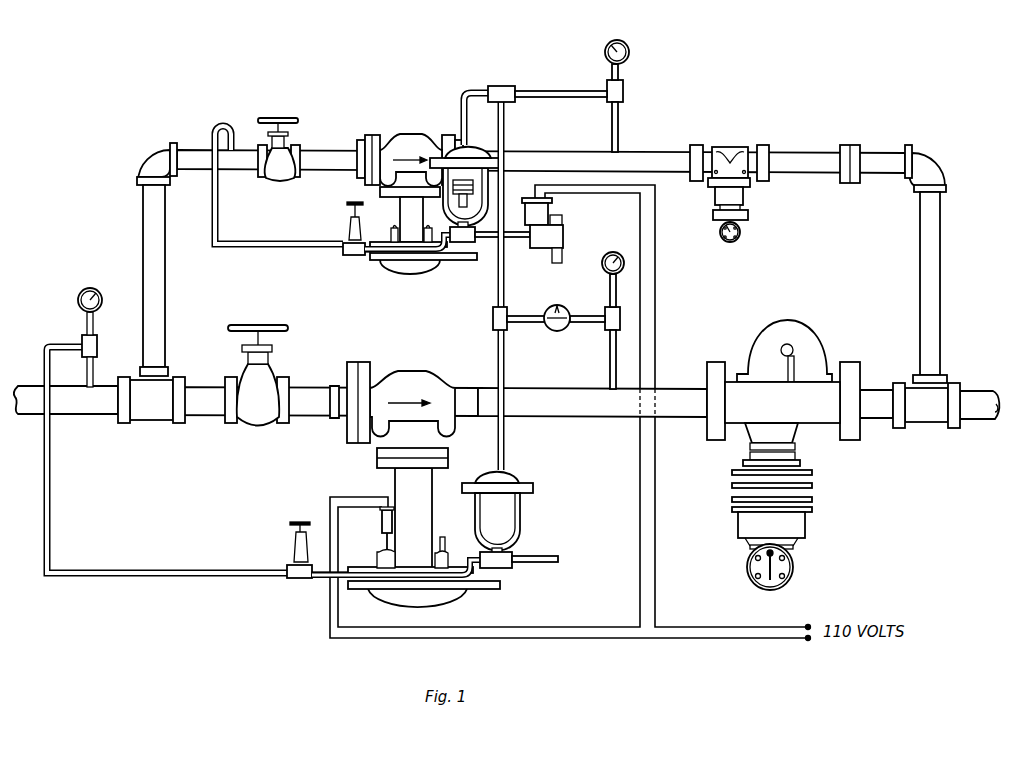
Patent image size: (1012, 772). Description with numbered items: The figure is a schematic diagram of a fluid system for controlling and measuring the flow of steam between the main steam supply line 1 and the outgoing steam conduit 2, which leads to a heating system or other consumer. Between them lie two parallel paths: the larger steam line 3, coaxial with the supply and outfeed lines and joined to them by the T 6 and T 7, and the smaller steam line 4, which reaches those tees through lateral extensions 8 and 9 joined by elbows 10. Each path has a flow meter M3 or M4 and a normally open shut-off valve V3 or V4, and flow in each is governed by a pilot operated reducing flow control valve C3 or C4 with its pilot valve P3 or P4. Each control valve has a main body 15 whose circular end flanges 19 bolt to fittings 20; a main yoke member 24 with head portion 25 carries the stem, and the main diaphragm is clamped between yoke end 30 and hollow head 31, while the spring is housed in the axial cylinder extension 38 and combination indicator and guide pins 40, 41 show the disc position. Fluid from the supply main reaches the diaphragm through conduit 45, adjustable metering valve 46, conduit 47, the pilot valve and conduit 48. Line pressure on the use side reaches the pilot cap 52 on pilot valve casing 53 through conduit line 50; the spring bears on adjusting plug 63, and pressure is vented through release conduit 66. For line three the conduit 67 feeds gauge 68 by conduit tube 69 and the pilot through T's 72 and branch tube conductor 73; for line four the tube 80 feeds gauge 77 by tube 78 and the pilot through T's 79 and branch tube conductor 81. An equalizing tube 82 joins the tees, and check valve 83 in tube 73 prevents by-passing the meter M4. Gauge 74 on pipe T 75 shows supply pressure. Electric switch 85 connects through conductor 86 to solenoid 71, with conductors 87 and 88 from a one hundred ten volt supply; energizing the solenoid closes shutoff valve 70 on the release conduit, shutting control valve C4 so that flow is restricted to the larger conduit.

The main steam supply line 1 is at (62, 408).
The outgoing steam conduit 2 is at (982, 422).
The steam line 3 is at (558, 418).
The steam line 4 is at (660, 151).
The T 6 is at (150, 423).
The T 7 is at (930, 426).
The lateral extension 8 is at (166, 268).
The lateral extension 9 is at (941, 272).
The elbow 10 is at (139, 160).
The main body 15 is at (405, 133).
The circular end flange 19 is at (374, 135).
The fitting 20 is at (368, 135).
The main yoke member 24 is at (403, 208).
The head portion 25 is at (448, 458).
The yoke end 30 is at (372, 243).
The hollow head 31 is at (400, 273).
The axial cylinder extension 38 is at (498, 590).
The combination indicator and guide pin 40 is at (390, 546).
The combination indicator and guide pin 41 is at (438, 548).
The conduit 45 is at (255, 248).
The metering valve 46 is at (346, 232).
The conduit 47 is at (368, 252).
The conduit 48 is at (447, 253).
The conduit line 50 is at (464, 100).
The cap 52 is at (470, 150).
The pilot valve casing 53 is at (470, 244).
The adjusting plug 63 is at (474, 195).
The release conduit 66 is at (506, 238).
The conduit 67 is at (610, 359).
The gauge 68 is at (602, 263).
The conduit tube 69 is at (610, 295).
The shutoff valve 70 is at (563, 238).
The solenoid 71 is at (550, 208).
The T 72 is at (492, 318).
The branch tube conductor 73 is at (583, 323).
The gauge 74 is at (93, 290).
The pipe T 75 is at (97, 345).
The gauge 77 is at (629, 52).
The tube 78 is at (620, 72).
The T 79 is at (505, 88).
The tube 80 is at (619, 118).
The branch tube conductor 81 is at (540, 93).
The equalizing tube 82 is at (505, 282).
The check valve 83 is at (560, 306).
The electric switch 85 is at (380, 521).
The conductor 86 is at (652, 540).
The conductor 87 is at (770, 640).
The conductor 88 is at (659, 548).
The reducing flow control valve C3 is at (362, 448).
The reducing flow control valve C4 is at (413, 130).
The pilot valve P3 is at (530, 504).
The pilot valve P4 is at (486, 146).
The shut-off valve V3 is at (256, 443).
The shut-off valve V4 is at (268, 188).
The flow meter M3 is at (808, 452).
The flow meter M4 is at (748, 138).